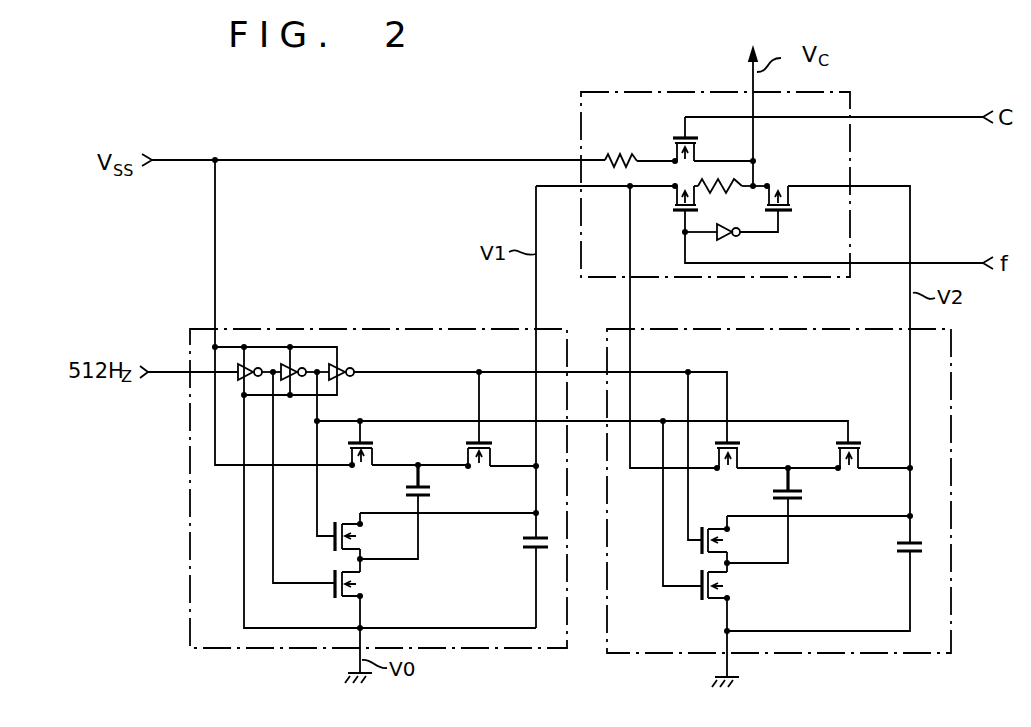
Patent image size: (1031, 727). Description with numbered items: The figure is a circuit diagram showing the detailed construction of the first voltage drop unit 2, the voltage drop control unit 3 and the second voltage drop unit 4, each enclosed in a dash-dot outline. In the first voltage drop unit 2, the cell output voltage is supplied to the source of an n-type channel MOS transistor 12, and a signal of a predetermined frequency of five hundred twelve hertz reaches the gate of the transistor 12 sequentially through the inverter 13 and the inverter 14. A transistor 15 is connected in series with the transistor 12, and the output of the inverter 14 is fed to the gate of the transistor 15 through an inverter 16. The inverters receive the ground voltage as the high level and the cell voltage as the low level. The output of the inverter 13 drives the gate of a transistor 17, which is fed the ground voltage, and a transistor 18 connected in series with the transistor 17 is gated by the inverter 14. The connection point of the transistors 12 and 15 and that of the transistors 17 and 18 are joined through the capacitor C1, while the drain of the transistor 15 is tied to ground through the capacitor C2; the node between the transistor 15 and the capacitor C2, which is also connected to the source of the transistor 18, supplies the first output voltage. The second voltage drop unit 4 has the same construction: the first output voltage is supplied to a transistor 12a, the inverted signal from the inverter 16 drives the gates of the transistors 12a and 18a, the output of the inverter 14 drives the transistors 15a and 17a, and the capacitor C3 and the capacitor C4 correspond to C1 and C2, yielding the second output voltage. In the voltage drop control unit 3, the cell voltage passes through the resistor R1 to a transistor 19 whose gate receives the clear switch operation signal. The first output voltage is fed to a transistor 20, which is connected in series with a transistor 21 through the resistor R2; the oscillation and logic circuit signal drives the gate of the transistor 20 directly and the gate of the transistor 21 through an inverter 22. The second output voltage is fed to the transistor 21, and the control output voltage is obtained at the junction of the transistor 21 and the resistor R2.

The first voltage drop unit 2 is at (325, 328).
The voltage drop control unit 3 is at (628, 91).
The second voltage drop unit 4 is at (953, 418).
The n-type channel MOS transistor 12 is at (382, 456).
The transistor 12a is at (747, 458).
The inverter 13 is at (245, 364).
The inverter 14 is at (284, 363).
The transistor 15 is at (497, 458).
The transistor 15a is at (856, 441).
The inverter 16 is at (340, 364).
The transistor 17 is at (362, 578).
The transistor 17a is at (728, 580).
The transistor 18 is at (355, 542).
The transistor 18a is at (731, 546).
The transistor 19 is at (700, 148).
The transistor 20 is at (668, 192).
The transistor 21 is at (782, 186).
The inverter 22 is at (735, 240).
The capacitor C1 is at (432, 491).
The capacitor C2 is at (518, 543).
The capacitor C3 is at (806, 496).
The capacitor C4 is at (890, 548).
The resistor R1 is at (621, 149).
The resistor R2 is at (720, 198).